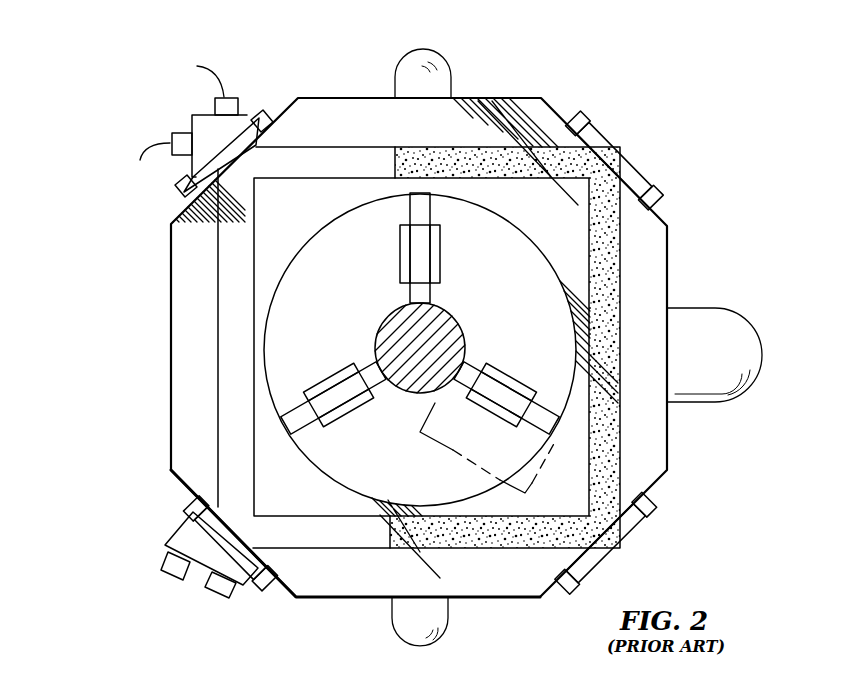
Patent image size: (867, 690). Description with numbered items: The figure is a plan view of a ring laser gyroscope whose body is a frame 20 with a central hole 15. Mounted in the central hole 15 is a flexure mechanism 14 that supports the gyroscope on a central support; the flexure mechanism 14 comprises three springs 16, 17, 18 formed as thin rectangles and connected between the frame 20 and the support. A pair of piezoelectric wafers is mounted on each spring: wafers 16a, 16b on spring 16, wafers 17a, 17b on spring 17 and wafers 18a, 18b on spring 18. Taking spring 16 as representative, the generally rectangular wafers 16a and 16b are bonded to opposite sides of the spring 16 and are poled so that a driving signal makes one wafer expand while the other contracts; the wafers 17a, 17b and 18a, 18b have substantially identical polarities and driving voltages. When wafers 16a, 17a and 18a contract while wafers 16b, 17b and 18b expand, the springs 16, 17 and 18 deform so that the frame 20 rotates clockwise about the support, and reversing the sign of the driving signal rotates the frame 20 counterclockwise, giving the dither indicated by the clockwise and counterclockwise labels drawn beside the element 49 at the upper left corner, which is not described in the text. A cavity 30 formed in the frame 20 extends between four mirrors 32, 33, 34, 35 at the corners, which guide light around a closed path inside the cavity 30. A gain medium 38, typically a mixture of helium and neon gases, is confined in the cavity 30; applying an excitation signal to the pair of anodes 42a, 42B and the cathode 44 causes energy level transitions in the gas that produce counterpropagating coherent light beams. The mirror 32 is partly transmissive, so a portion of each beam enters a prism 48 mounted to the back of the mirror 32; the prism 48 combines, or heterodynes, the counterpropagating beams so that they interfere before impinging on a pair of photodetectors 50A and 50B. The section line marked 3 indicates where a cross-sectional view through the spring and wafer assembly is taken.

The flexure mechanism 14 is at (196, 345).
The central hole 15 is at (542, 263).
The spring 16 is at (437, 292).
The piezoelectric wafer 16a is at (403, 266).
The piezoelectric wafer 16b is at (447, 258).
The spring 17 is at (480, 366).
The piezoelectric wafer 17a is at (538, 382).
The piezoelectric wafer 17b is at (484, 418).
The spring 18 is at (369, 359).
The piezoelectric wafer 18a is at (365, 405).
The piezoelectric wafer 18b is at (324, 370).
The frame 20 is at (190, 297).
The cavity 30 is at (218, 467).
The mirror 32 is at (187, 499).
The mirror 33 is at (256, 110).
The mirror 34 is at (630, 157).
The mirror 35 is at (627, 540).
The gain medium 38 is at (648, 258).
The anode 42a is at (452, 80).
The anode 42B is at (395, 613).
The cathode 44 is at (742, 318).
The prism 48 is at (165, 522).
The switch body 49 is at (191, 125).
The photodetector 50A is at (178, 574).
The photodetector 50B is at (227, 596).
The section line 3- 3 is at (556, 440).